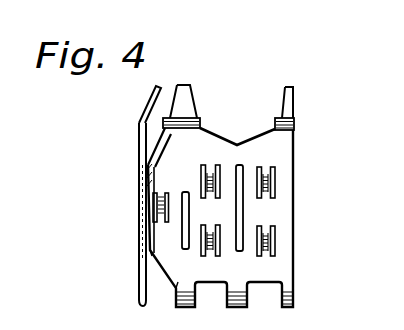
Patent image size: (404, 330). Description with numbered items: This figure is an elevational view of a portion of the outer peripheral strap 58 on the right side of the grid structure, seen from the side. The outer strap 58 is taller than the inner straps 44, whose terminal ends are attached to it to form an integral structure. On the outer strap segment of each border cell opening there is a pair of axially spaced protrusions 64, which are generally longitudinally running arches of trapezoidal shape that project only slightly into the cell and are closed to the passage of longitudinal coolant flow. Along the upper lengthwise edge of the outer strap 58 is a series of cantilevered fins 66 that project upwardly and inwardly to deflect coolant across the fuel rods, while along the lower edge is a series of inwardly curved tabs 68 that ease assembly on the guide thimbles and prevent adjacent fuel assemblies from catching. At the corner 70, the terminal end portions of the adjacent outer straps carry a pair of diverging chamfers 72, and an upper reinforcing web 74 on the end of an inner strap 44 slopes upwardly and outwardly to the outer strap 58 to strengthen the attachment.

The inner strap 44 is at (182, 230).
The outer peripheral strap 58 is at (143, 155).
The protrusion 64 is at (153, 212).
The cantilevered fin 66 is at (150, 102).
The inwardly curved tab 68 is at (140, 304).
The corner 70 is at (124, 192).
The chamfer 72 is at (152, 143).
The upper reinforcing web 74 is at (242, 167).